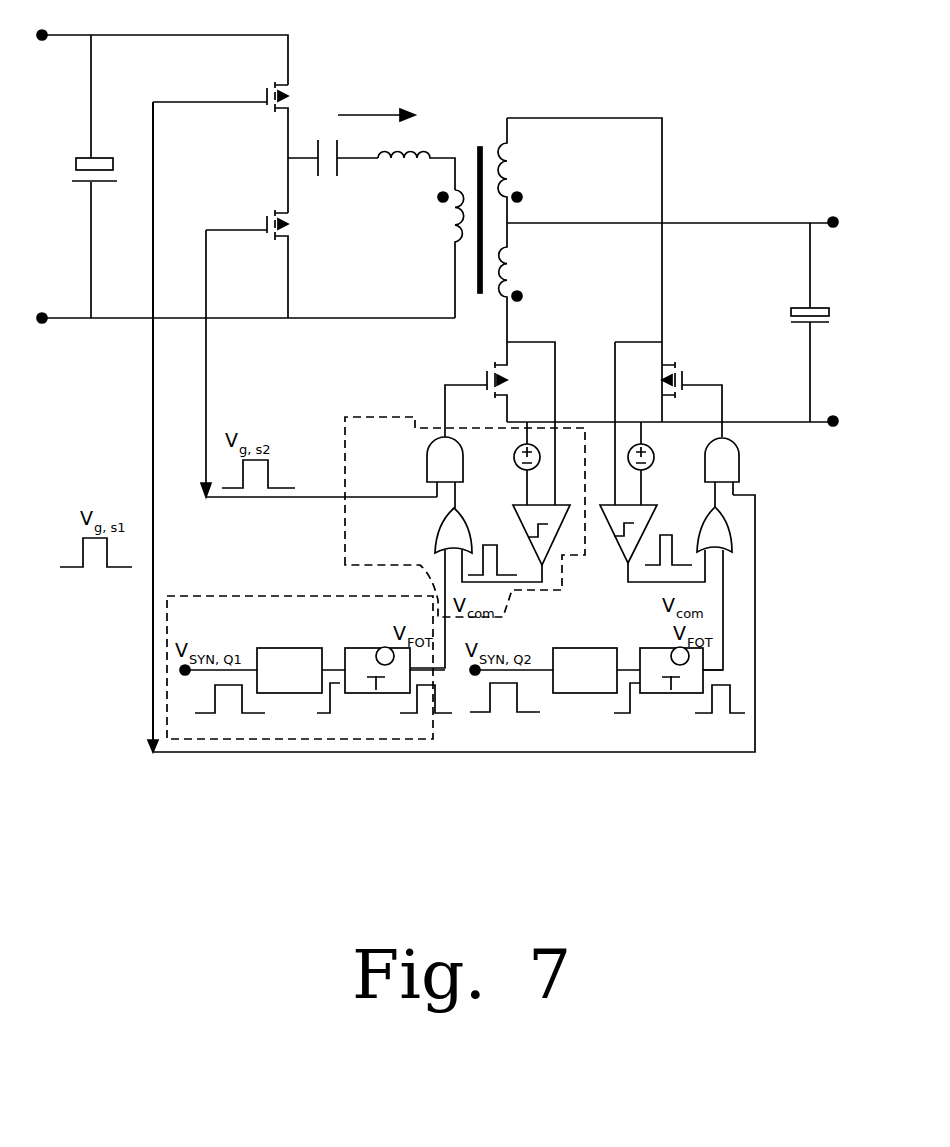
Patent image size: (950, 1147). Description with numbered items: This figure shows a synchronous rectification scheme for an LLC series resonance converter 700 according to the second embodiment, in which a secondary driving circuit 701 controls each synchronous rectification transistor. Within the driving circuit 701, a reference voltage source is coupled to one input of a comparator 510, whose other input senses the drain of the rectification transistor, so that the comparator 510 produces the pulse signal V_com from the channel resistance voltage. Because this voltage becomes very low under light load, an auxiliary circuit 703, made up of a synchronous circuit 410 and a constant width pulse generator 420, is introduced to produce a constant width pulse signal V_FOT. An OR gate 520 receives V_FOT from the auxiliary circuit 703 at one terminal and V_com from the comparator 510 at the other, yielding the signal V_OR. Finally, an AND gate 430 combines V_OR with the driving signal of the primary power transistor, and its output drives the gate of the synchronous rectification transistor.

The synchronous circuit 410 is at (290, 648).
The constant width pulse generator 420 is at (380, 650).
The AND gate 430 is at (427, 465).
The comparator 510 is at (548, 548).
The OR gate 520 is at (437, 545).
The resonant converter with synchronous rectification 700 is at (877, 652).
The synchronous rectifier control circuit 701 is at (345, 517).
The auxiliary circuit 703 is at (264, 741).